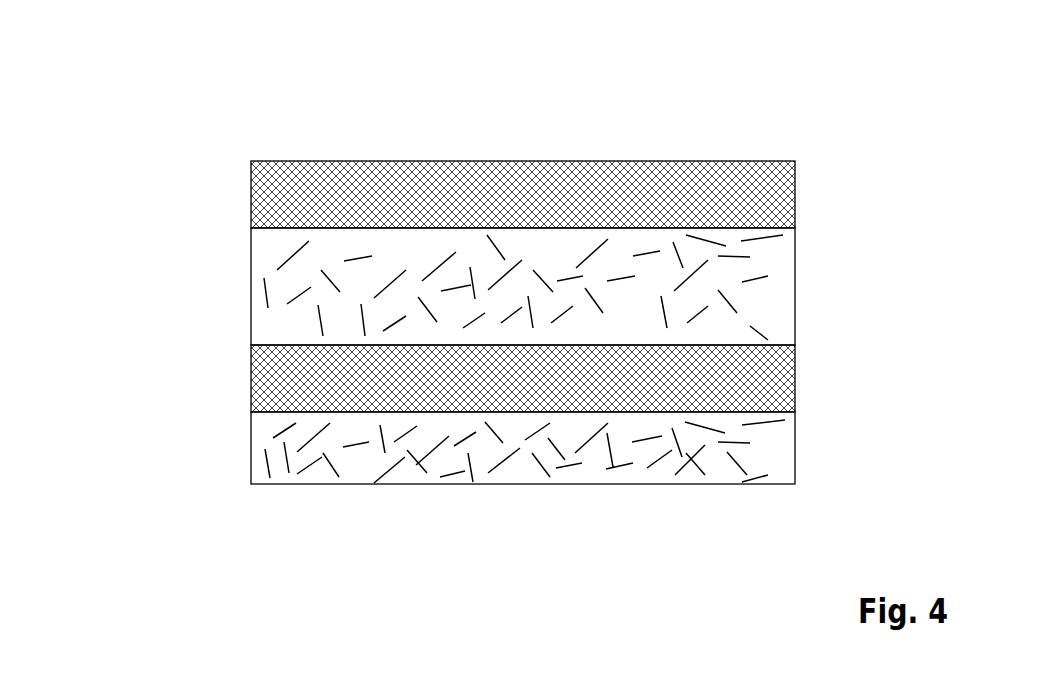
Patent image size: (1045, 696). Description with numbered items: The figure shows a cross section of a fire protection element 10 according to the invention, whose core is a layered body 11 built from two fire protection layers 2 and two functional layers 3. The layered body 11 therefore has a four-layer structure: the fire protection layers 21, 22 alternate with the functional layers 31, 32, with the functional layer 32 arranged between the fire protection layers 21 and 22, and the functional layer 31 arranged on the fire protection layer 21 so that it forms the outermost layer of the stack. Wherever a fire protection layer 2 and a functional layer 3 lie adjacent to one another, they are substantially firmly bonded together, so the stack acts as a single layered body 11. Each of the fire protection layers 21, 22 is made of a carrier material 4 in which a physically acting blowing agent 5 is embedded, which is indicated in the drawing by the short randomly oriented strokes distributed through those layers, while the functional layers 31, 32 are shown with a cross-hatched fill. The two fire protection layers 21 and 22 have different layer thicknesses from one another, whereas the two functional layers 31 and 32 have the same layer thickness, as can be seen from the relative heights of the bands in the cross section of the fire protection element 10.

The fire protection element 10 is at (520, 122).
The layered body 11 is at (815, 161).
The fire protection layers 2 is at (153, 292).
The functional layers 3 is at (150, 379).
The fire protection layer 21 is at (250, 228).
The fire protection layer 22 is at (250, 412).
The functional layer 31 is at (238, 161).
The functional layer 32 is at (238, 345).
The carrier material 4 is at (696, 258).
The physically acting blowing agent 5 is at (647, 252).